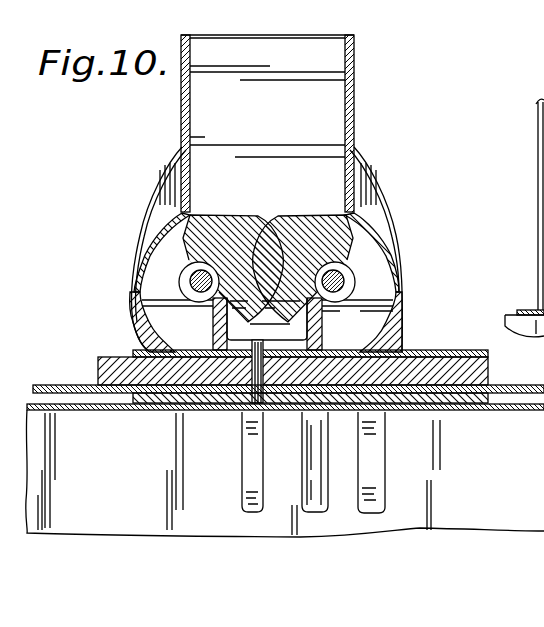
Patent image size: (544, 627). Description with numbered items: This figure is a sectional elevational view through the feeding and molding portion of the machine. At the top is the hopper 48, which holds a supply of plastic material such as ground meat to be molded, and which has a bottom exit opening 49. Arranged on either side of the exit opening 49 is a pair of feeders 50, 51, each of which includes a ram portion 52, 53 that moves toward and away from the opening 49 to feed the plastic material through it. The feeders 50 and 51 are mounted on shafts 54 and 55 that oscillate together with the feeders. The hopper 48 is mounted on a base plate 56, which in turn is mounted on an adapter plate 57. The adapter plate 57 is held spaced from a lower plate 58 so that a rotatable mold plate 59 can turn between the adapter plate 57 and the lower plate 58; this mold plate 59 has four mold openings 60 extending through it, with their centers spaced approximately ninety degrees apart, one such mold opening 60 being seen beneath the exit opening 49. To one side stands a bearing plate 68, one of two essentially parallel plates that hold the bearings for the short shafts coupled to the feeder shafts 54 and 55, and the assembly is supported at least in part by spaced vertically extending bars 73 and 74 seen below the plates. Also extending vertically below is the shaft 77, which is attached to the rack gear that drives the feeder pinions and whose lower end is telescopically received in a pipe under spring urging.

The hopper 48 is at (350, 73).
The bottom exit opening 49 is at (187, 410).
The feeder 50 is at (221, 218).
The feeder 51 is at (312, 220).
The ram portion 52 is at (225, 326).
The ram portion 53 is at (366, 331).
The shaft 54 is at (186, 273).
The shaft 55 is at (344, 279).
The base plate 56 is at (408, 352).
The adapter plate 57 is at (452, 378).
The lower plate 58 is at (438, 401).
The rotatable mold plate 59 is at (509, 386).
The mold opening 60 is at (250, 403).
The bearing plate 68 is at (539, 125).
The vertically extending bar 73 is at (370, 474).
The vertically extending bar 74 is at (245, 490).
The vertically extending shaft 77 is at (312, 470).